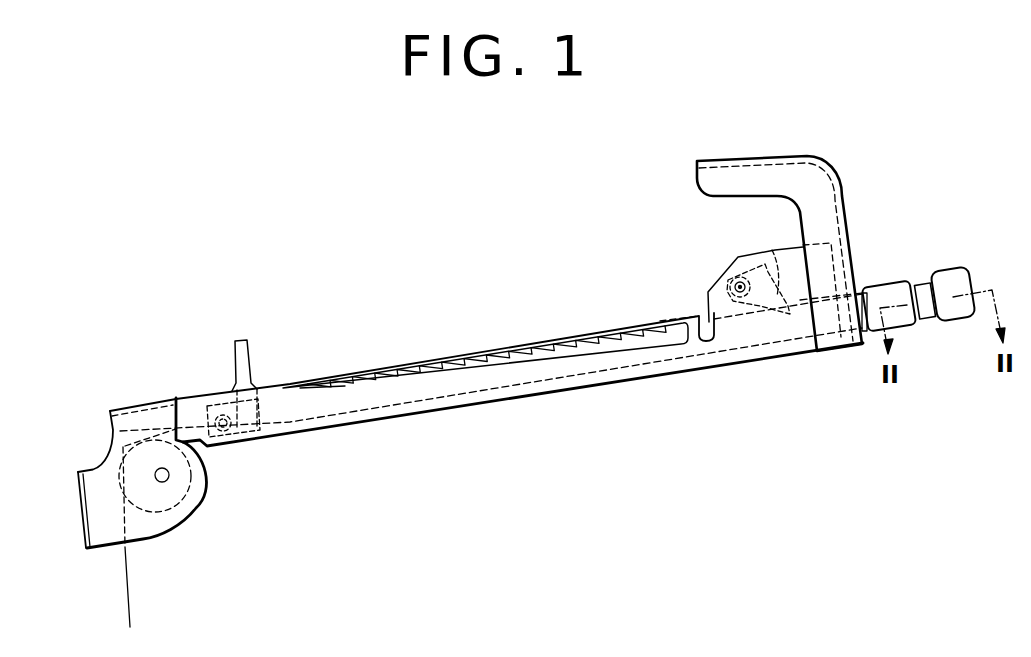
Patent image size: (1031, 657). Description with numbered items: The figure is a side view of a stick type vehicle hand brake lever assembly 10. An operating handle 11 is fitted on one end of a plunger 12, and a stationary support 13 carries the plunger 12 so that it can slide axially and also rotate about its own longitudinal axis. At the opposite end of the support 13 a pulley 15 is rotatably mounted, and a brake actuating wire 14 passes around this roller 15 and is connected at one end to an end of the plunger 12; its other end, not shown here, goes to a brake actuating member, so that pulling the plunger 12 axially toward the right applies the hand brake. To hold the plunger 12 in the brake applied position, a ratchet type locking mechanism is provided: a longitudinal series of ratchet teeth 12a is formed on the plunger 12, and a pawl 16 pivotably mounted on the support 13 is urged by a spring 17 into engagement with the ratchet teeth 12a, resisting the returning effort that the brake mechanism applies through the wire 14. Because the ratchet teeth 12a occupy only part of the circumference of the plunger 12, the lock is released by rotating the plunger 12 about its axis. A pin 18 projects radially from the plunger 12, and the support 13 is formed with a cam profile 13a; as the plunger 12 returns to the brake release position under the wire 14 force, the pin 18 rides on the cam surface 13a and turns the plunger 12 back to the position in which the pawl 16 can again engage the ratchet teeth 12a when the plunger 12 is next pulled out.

The vehicle hand brake lever assembly 10 is at (503, 406).
The operating handle 11 is at (947, 277).
The plunger 12 is at (588, 352).
The ratchet teeth 12a is at (597, 345).
The stationary support 13 is at (655, 372).
The cam profile 13a is at (328, 391).
The brake actuating wire 14 is at (128, 585).
The pulley 15 is at (207, 483).
The pawl 16 is at (772, 250).
The spring 17 is at (740, 257).
The pin 18 is at (250, 362).